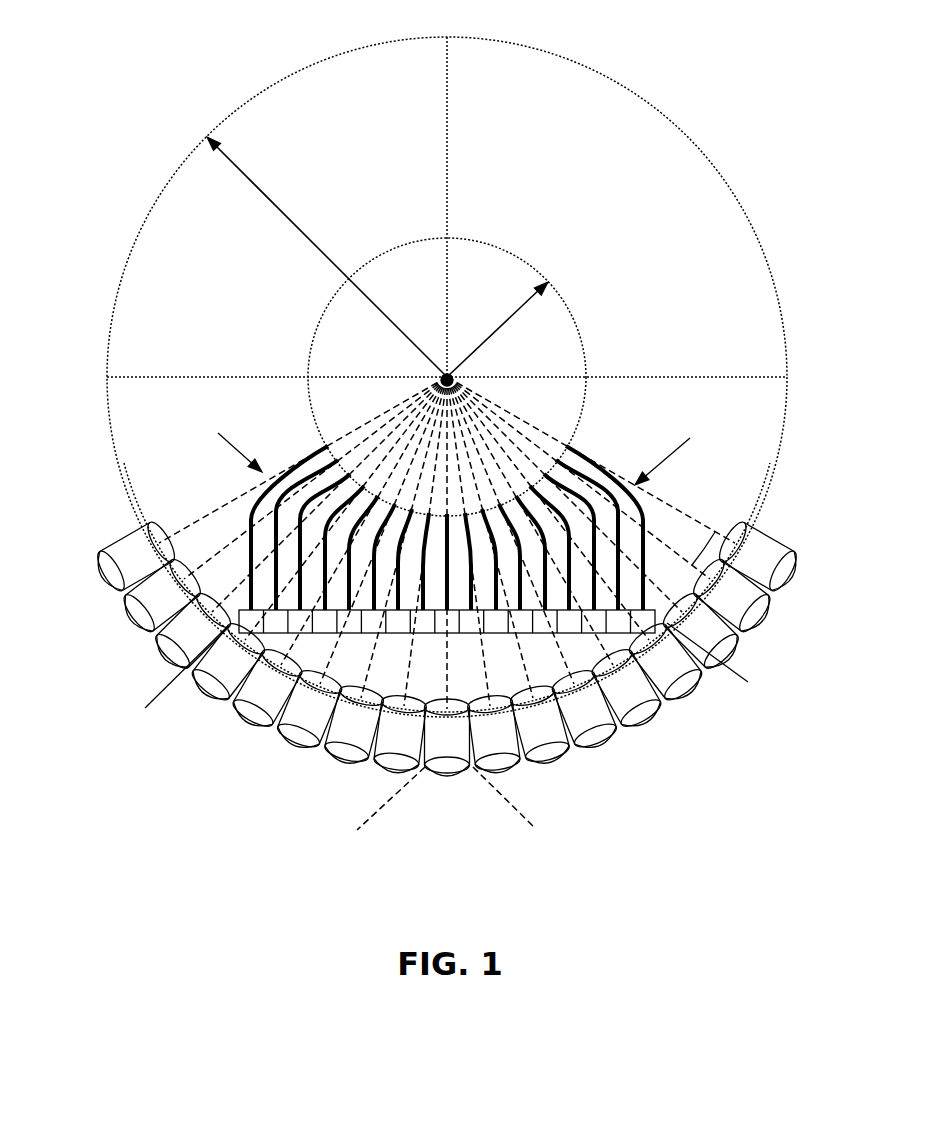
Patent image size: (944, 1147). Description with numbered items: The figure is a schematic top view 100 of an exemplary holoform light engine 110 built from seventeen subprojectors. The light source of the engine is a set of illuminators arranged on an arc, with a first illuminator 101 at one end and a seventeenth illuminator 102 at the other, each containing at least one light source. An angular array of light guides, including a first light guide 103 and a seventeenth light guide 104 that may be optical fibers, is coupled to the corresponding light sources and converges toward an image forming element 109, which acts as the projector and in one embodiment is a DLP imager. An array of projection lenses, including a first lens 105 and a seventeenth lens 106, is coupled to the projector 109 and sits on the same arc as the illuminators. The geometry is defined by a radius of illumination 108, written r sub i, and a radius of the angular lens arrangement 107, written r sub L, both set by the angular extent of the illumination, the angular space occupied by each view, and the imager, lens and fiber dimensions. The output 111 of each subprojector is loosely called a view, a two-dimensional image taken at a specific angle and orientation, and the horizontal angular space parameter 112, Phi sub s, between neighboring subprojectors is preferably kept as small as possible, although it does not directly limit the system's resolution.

The top view 100 is at (748, 48).
The illuminator 101 is at (735, 672).
The illuminator 102 is at (160, 686).
The light guide 103 is at (672, 458).
The light guide 104 is at (232, 452).
The lens 105 is at (97, 571).
The lens 106 is at (792, 566).
The radius of angular lens arrangement 107 is at (281, 209).
The radius of illumination 108 is at (505, 308).
The image forming element 109 is at (458, 374).
The holoform light engine 110 is at (578, 762).
The output 111 is at (510, 808).
The horizontal angular space parameter 112 is at (703, 540).